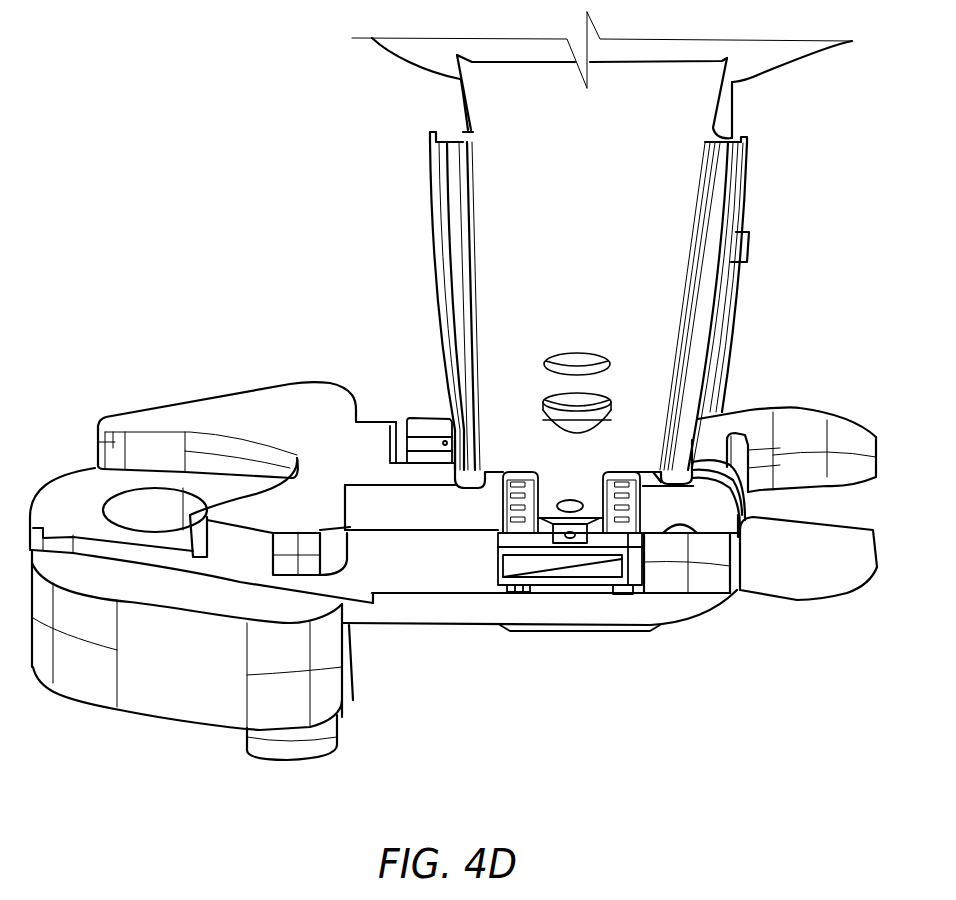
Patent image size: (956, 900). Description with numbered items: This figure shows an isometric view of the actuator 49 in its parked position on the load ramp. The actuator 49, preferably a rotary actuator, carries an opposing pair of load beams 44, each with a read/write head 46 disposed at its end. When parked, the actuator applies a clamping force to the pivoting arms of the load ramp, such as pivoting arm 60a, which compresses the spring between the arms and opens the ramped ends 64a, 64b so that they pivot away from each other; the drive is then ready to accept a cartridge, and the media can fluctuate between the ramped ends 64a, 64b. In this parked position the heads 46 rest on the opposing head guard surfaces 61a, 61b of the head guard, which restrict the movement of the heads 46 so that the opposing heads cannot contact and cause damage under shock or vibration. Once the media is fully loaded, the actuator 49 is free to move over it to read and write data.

The actuator 49 is at (379, 107).
The load beam 44 is at (735, 188).
The pivoting arm 60a is at (430, 415).
The read/write head 46 is at (577, 568).
The head guard surface 61a is at (447, 567).
The head guard surface 61b is at (665, 624).
The ramped end 64a is at (835, 410).
The ramped end 64b is at (815, 600).